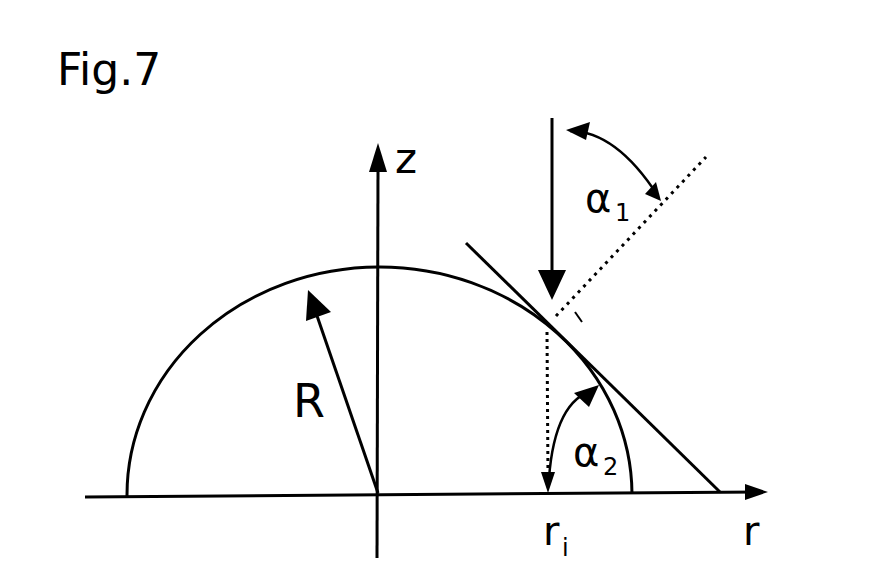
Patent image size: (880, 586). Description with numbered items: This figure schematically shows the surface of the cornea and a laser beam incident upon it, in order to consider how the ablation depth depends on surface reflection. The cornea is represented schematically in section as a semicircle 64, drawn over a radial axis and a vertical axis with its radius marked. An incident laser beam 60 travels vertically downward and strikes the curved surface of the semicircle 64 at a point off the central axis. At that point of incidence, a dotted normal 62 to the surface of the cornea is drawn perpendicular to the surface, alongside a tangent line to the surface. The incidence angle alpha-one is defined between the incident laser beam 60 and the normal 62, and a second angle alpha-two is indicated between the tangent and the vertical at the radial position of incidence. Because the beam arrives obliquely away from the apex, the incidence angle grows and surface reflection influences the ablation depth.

The incident laser beam 60 is at (542, 182).
The normal to the surface of the cornea 62 is at (630, 243).
The semicircle 64 is at (247, 297).